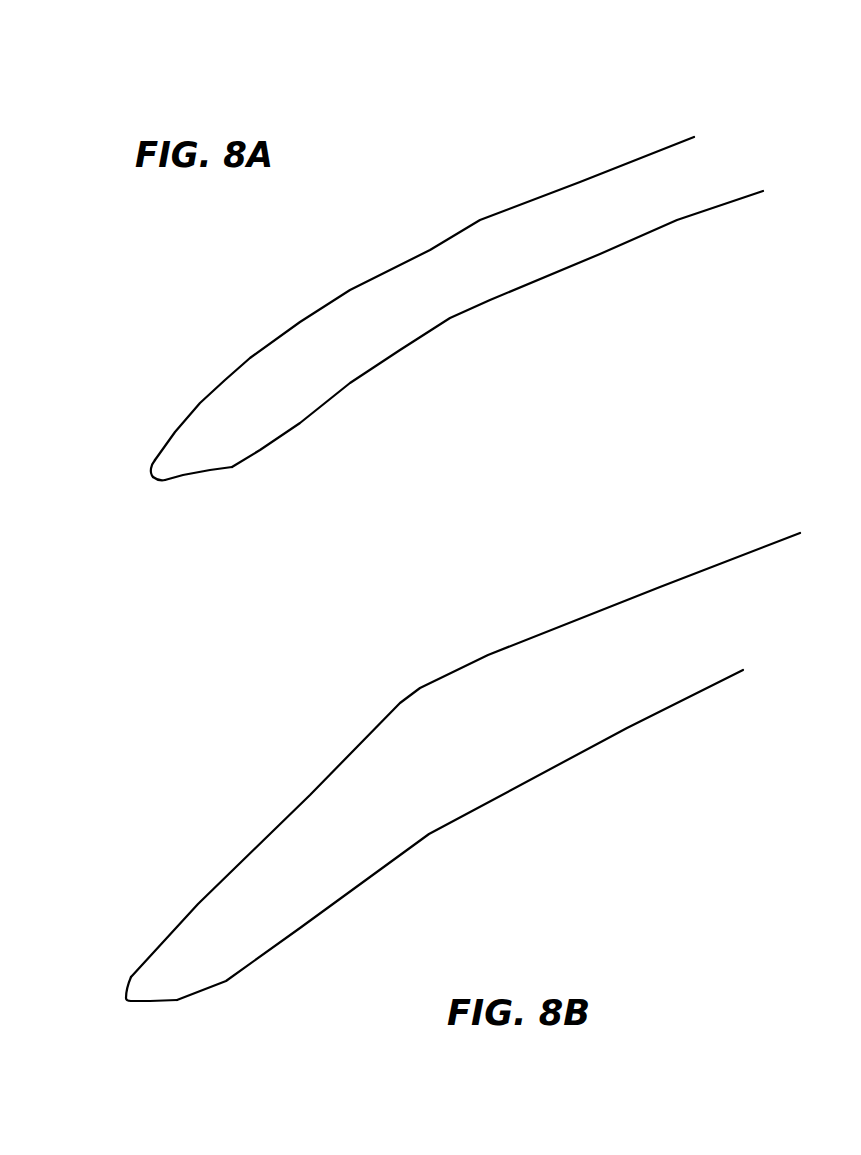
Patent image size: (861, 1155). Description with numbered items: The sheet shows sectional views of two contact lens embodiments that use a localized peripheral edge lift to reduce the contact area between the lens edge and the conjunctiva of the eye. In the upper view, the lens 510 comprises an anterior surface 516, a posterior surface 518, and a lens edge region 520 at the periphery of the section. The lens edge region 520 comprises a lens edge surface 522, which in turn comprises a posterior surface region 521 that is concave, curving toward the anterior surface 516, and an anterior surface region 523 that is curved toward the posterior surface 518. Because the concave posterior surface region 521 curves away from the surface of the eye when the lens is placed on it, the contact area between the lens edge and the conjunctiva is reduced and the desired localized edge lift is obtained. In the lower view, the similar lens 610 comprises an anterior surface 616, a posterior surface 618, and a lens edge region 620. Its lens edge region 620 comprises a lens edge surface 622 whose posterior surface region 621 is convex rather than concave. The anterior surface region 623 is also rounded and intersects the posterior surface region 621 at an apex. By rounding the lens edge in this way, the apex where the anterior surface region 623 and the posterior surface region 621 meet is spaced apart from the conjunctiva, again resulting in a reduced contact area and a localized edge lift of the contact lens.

In FIG. 8A, the lens 510 is at (542, 158).
In FIG. 8A, the anterior surface 516 is at (425, 248).
In FIG. 8A, the posterior surface 518 is at (485, 307).
In FIG. 8A, the lens edge region 520 is at (174, 388).
In FIG. 8A, the posterior surface region 521 is at (200, 475).
In FIG. 8A, the lens edge surface 522 is at (153, 478).
In FIG. 8A, the anterior surface region 523 is at (152, 460).
In FIG. 8B, the lens 610 is at (700, 537).
In FIG. 8B, the anterior surface 616 is at (488, 655).
In FIG. 8B, the posterior surface 618 is at (627, 728).
In FIG. 8B, the lens edge region 620 is at (149, 913).
In FIG. 8B, the posterior surface region 621 is at (177, 1003).
In FIG. 8B, the lens edge surface 622 is at (128, 1002).
In FIG. 8B, the anterior surface region 623 is at (131, 977).